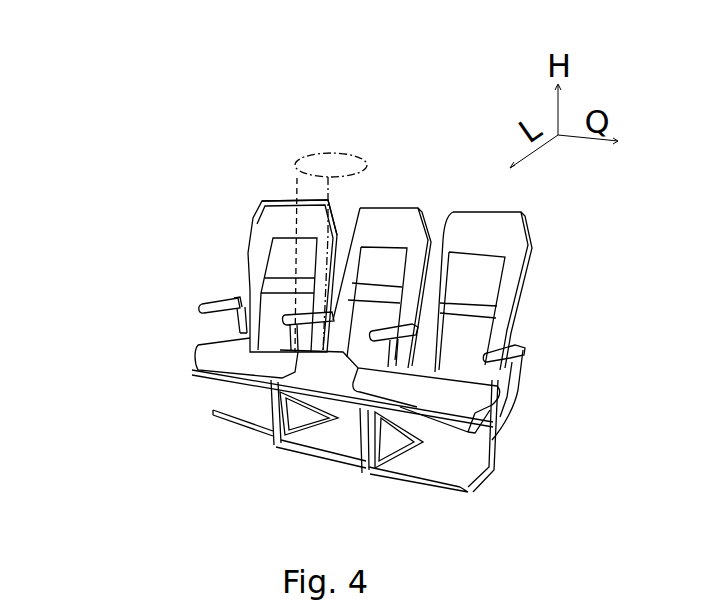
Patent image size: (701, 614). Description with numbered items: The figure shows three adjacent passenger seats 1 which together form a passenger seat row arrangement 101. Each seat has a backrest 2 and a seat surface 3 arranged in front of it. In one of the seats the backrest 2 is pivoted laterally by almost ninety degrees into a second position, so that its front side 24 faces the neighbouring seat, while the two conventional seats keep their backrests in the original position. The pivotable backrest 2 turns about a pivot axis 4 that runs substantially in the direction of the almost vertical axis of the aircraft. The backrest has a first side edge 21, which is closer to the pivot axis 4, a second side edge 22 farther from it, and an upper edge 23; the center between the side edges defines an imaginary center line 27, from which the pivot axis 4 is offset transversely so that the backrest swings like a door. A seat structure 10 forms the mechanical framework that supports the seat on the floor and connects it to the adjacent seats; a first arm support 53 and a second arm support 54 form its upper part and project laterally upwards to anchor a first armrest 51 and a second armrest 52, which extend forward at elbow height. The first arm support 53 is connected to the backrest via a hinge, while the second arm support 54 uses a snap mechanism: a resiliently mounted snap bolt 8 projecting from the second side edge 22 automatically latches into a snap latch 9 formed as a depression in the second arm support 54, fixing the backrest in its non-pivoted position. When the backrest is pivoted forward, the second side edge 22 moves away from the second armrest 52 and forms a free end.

The passenger seat 1 is at (277, 184).
The passenger seat row arrangement 101 is at (470, 100).
The backrest 2 is at (256, 219).
The second side edge 22 is at (258, 230).
The upper edge 23 is at (303, 225).
The front side 24 is at (263, 205).
The pivot axis 4 is at (324, 180).
The first side edge 21 is at (333, 226).
The first armrest 51 is at (378, 280).
The second armrest 52 is at (196, 309).
The second arm support 54 is at (235, 316).
The snap latch 9 is at (236, 303).
The snap bolt 8 is at (305, 331).
The center line 27 is at (290, 334).
The seat surface 3 is at (248, 360).
The seat structure 10 is at (277, 415).
The first arm support 53 is at (378, 280).